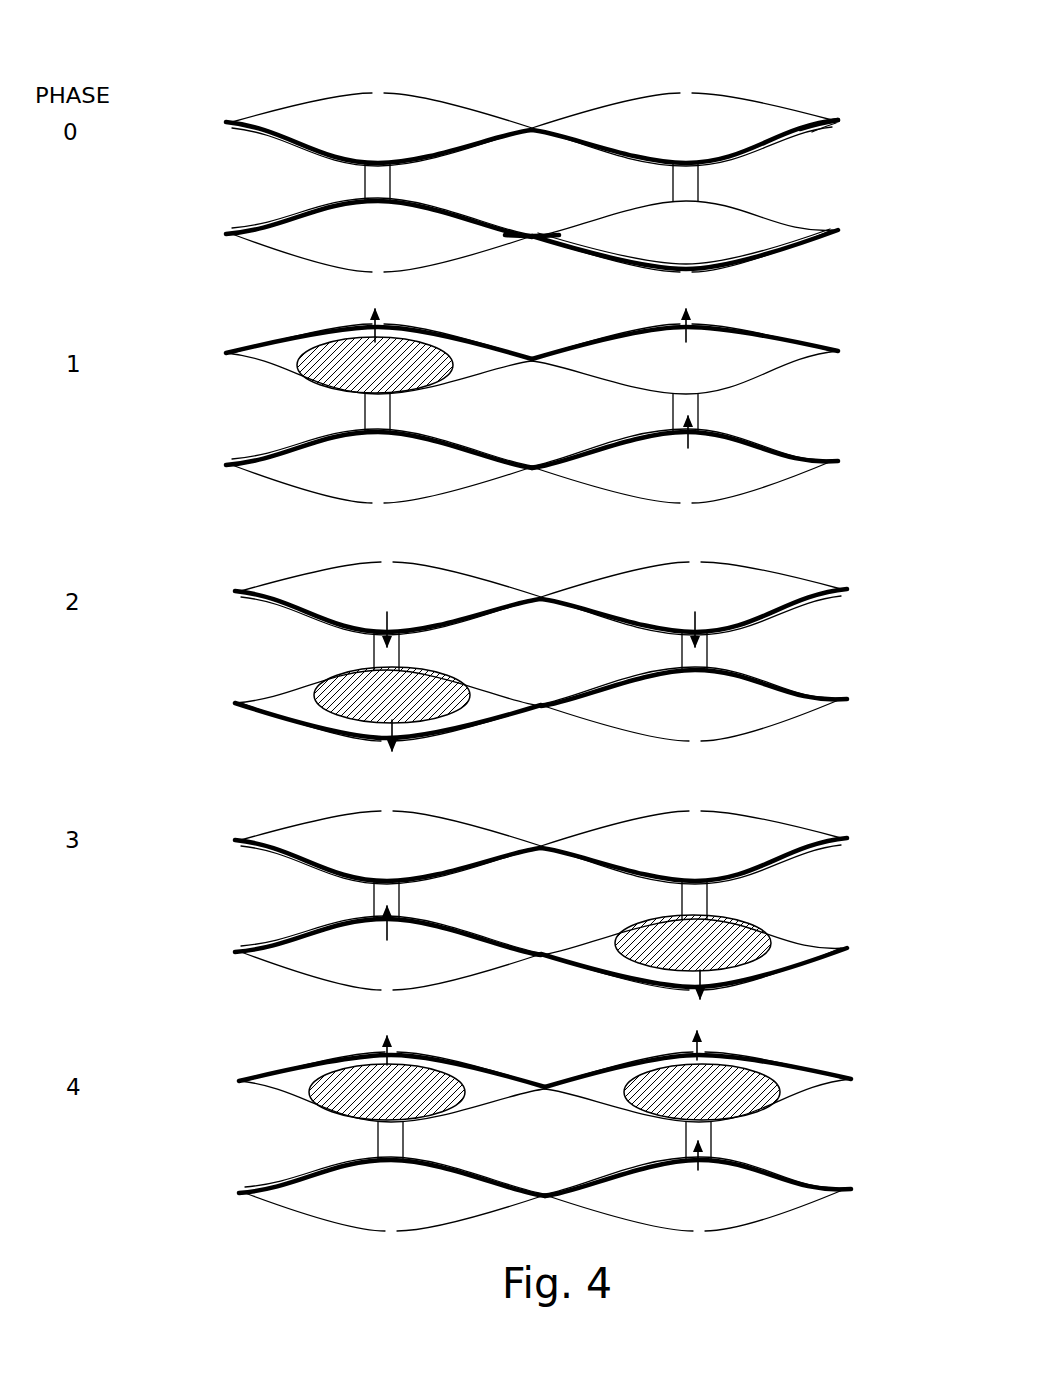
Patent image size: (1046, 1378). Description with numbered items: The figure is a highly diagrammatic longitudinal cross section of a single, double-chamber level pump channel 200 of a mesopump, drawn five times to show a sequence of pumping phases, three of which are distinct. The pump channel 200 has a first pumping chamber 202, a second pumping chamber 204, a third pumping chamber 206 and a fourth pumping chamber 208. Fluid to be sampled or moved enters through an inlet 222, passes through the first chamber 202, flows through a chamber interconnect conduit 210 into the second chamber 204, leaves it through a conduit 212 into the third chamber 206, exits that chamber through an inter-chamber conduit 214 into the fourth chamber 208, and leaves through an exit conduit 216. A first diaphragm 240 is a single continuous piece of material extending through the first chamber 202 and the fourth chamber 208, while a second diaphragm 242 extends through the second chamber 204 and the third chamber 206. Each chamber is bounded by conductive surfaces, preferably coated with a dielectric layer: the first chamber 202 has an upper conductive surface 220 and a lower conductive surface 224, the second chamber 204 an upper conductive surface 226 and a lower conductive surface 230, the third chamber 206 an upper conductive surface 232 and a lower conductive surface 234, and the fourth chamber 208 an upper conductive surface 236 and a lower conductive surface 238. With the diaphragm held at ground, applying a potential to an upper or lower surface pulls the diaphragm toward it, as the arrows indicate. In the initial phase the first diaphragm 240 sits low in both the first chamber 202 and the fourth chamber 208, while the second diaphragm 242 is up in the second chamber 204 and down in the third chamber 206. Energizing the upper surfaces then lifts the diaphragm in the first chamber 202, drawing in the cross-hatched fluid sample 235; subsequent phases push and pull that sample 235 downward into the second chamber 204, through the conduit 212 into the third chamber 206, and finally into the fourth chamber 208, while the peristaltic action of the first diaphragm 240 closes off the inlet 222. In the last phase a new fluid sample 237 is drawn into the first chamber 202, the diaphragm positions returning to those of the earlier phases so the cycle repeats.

The pump channel 200 is at (552, 62).
The first pumping chamber 202 is at (407, 110).
The second pumping chamber 204 is at (398, 250).
The third pumping chamber 206 is at (783, 245).
The fourth pumping chamber 208 is at (718, 113).
The chamber interconnect conduit 210 is at (385, 172).
The conduit 212 is at (535, 236).
The inter-chamber conduit 214 is at (695, 172).
The exit conduit 216 is at (834, 130).
The upper conductive surface 220 is at (288, 117).
The inlet 222 is at (232, 131).
The lower conductive surface 224 is at (270, 143).
The upper conductive surface 226 is at (290, 213).
The lower conductive surface 230 is at (266, 259).
The upper conductive surface 232 is at (757, 221).
The lower conductive surface 234 is at (750, 268).
The fluid sample of interest 235 is at (345, 355).
The upper conductive surface 236 is at (795, 122).
The new fluid sample 237 is at (350, 1087).
The lower conductive surface 238 is at (810, 142).
The first diaphragm 240 is at (614, 148).
The second diaphragm 242 is at (598, 229).